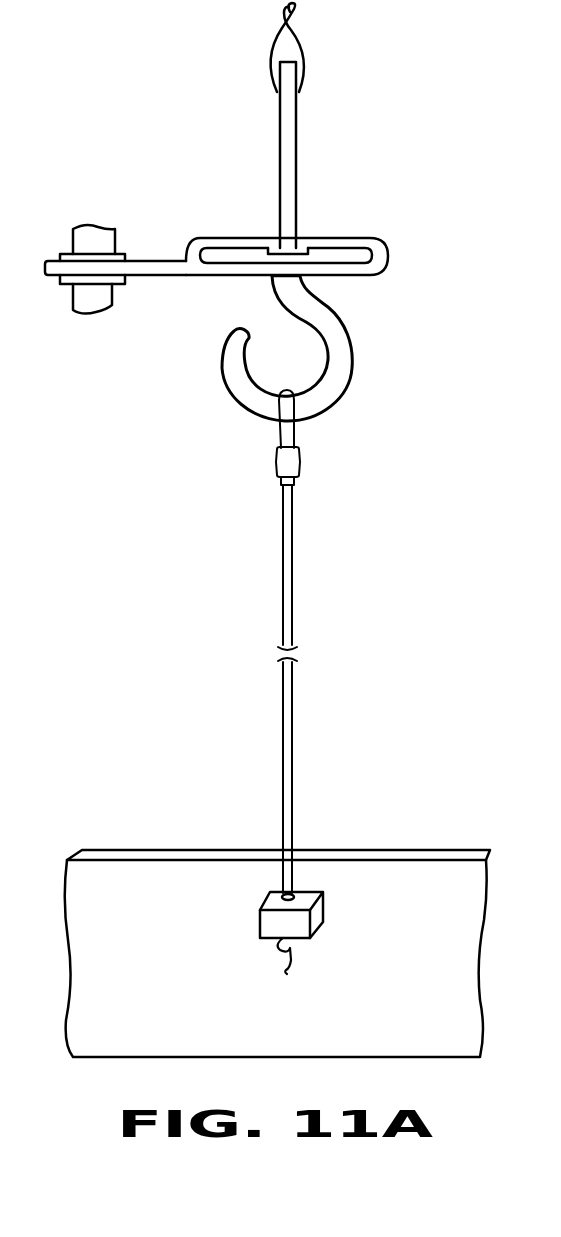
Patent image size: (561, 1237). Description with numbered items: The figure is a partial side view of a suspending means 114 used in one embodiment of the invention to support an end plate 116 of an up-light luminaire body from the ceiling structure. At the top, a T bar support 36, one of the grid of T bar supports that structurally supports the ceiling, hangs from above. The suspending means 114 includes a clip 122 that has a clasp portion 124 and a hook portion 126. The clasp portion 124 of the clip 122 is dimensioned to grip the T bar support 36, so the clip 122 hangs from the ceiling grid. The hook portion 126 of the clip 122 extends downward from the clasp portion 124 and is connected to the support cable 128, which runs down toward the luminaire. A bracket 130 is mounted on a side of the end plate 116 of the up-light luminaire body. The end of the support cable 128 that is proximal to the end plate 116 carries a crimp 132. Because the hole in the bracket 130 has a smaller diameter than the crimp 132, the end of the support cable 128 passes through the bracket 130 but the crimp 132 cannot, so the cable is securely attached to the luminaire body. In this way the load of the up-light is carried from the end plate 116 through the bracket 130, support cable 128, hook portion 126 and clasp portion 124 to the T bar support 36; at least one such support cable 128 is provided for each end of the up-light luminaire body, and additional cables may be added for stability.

The T bar support 36 is at (297, 128).
The suspending means 114 is at (432, 315).
The end plate 116 is at (428, 866).
The clip 122 is at (302, 278).
The clasp portion 124 is at (388, 243).
The hook portion 126 is at (345, 383).
The support cable 128 is at (294, 566).
The bracket 130 is at (267, 898).
The crimp 132 is at (277, 951).